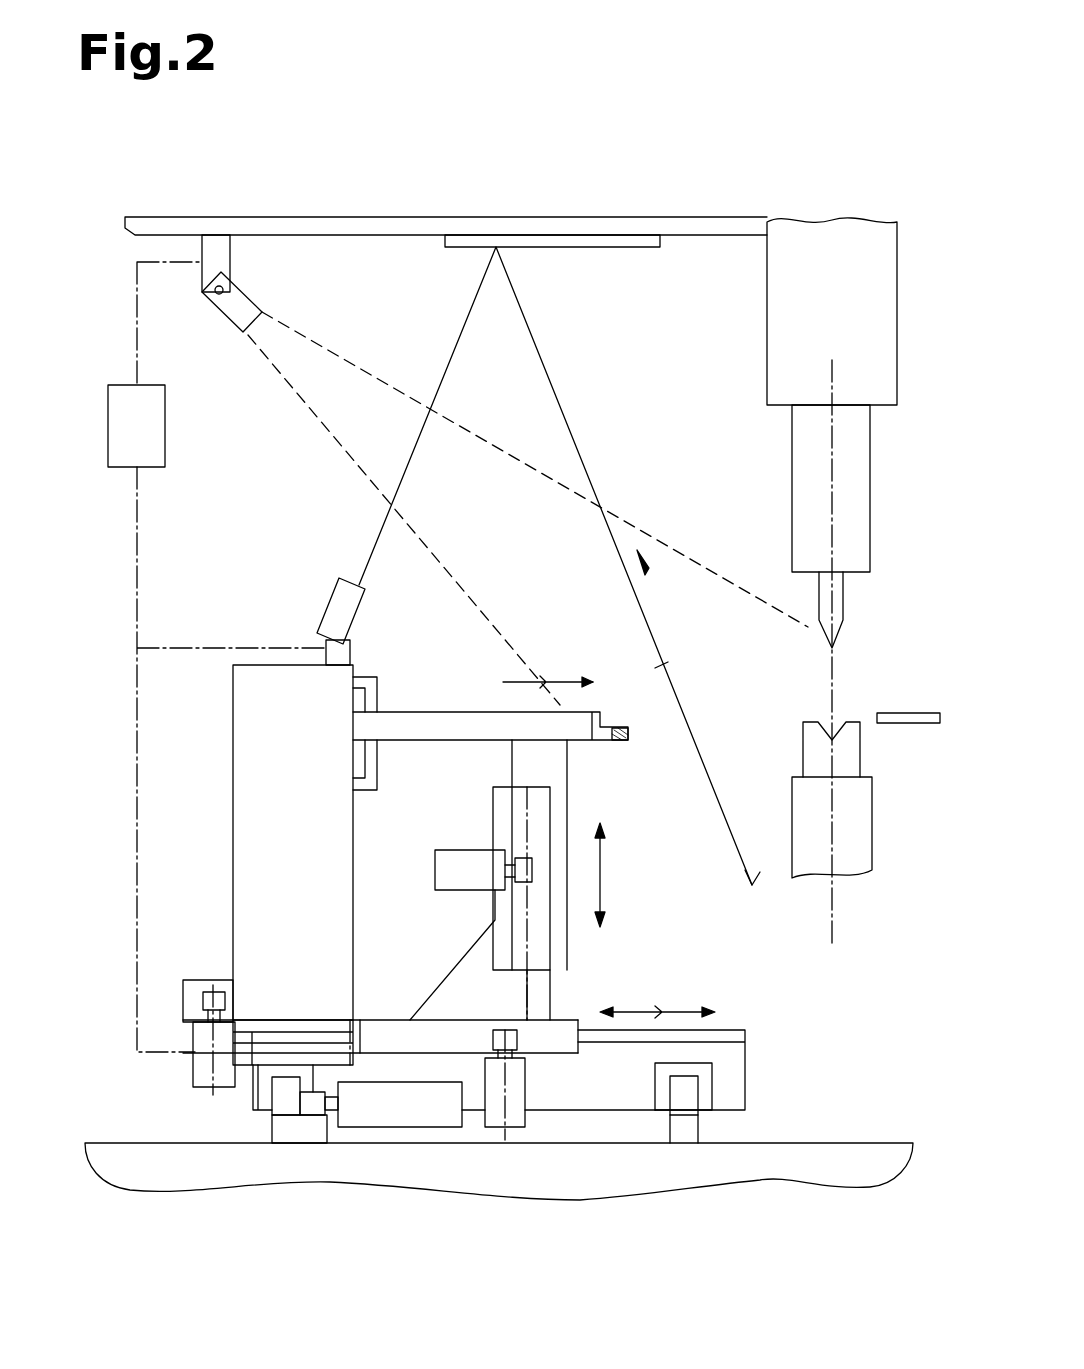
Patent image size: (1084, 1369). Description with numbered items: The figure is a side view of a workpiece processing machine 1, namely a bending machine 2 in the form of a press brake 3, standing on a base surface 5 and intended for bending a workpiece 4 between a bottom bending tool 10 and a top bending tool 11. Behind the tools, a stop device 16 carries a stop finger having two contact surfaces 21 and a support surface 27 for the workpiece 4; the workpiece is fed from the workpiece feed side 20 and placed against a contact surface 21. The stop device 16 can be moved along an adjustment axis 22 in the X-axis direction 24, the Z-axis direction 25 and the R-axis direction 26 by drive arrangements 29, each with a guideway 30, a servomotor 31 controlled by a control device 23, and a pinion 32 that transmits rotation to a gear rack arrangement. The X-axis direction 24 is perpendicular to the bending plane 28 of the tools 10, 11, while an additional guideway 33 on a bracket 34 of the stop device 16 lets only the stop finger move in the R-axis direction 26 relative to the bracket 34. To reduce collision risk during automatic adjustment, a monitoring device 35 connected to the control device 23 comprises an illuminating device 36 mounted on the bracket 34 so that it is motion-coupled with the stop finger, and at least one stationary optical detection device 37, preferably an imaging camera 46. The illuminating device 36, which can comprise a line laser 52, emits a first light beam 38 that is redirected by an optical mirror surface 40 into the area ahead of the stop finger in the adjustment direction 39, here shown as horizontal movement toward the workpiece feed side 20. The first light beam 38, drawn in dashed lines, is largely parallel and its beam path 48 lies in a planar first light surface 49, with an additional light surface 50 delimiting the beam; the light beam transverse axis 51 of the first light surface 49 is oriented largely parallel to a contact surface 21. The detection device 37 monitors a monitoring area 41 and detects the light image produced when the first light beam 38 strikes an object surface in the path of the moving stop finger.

The workpiece processing machine 1 is at (858, 138).
The bending machine 2 is at (815, 110).
The press brake 3 is at (815, 110).
The workpiece 4 is at (910, 728).
The base surface 5 is at (845, 1140).
The bottom bending tool 10 is at (868, 767).
The top bending tool 11 is at (858, 605).
The stop device 16 is at (185, 752).
The workpiece feed side 20 is at (932, 668).
The contact surface 21 is at (598, 724).
The adjustment axis 22 is at (464, 1081).
The control device 23 is at (122, 383).
The X-axis direction 24 is at (668, 1012).
The Z-axis direction 25 is at (187, 987).
The R-axis direction 26 is at (605, 882).
The support surface 27 is at (625, 731).
The bending plane 28 is at (838, 918).
The drive arrangement 29 is at (440, 896).
The guideway 30 is at (523, 1006).
The servomotor 31 is at (437, 868).
The pinion 32 is at (522, 858).
The additional guideway 33 is at (380, 696).
The bracket 34 is at (215, 846).
The monitoring device 35 is at (205, 372).
The illuminating device 36 is at (330, 598).
The optical detection device 37 is at (268, 268).
The first light beam 38 is at (468, 326).
The adjustment direction 39 is at (558, 678).
The optical mirror surface 40 is at (600, 255).
The monitoring area 41 is at (527, 530).
The imaging camera 46 is at (404, 520).
The beam path 48 is at (640, 537).
The first light surface 49 is at (566, 416).
The additional light surface 50 is at (548, 390).
The light beam transverse axis 51 is at (660, 666).
The line laser 52 is at (338, 652).